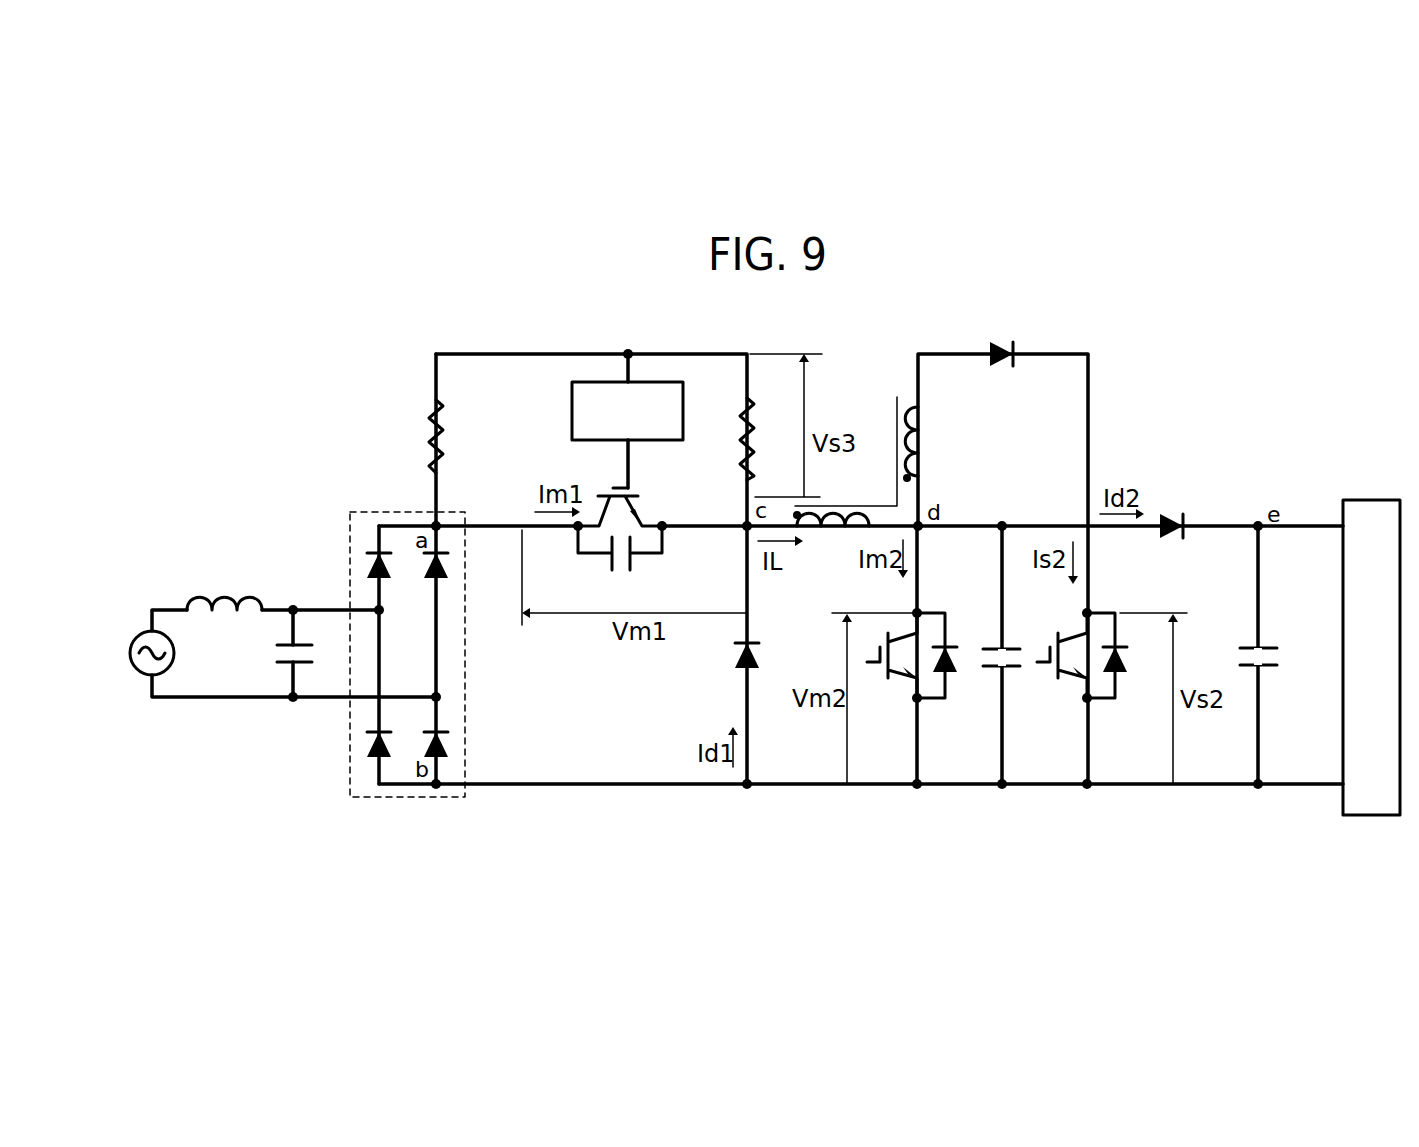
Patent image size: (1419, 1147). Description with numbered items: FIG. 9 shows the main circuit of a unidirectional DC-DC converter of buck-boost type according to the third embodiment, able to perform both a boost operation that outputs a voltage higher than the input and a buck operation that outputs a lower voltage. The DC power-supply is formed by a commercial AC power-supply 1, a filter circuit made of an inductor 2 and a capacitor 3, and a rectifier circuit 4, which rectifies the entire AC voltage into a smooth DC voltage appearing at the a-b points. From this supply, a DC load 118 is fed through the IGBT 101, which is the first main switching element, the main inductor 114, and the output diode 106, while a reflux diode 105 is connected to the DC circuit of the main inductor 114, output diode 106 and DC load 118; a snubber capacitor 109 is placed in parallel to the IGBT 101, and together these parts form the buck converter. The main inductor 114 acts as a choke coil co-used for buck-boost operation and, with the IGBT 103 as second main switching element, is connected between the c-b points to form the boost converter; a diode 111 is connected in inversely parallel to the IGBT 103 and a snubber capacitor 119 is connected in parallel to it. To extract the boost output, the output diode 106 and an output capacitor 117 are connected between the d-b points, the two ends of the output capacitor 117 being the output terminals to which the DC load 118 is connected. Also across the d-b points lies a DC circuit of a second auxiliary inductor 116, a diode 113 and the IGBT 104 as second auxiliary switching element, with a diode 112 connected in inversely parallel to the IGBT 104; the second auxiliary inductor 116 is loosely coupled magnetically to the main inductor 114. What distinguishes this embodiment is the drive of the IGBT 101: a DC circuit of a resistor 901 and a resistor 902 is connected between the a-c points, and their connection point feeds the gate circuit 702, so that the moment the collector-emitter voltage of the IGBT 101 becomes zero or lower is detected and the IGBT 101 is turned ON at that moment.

The commercial AC power-supply 1 is at (129, 655).
The inductor 2 is at (236, 600).
The capacitor 3 is at (275, 657).
The rectifier circuit 4 is at (348, 762).
The IGBT 101 is at (644, 510).
The IGBT 103 is at (885, 677).
The IGBT 104 is at (1055, 677).
The reflux diode 105 is at (737, 667).
The output diode 106 is at (1175, 536).
The snubber capacitor 109 is at (623, 565).
The diode 111 is at (955, 665).
The diode 112 is at (1127, 665).
The diode 113 is at (1005, 349).
The main inductor 114 is at (828, 534).
The second auxiliary inductor 116 is at (928, 440).
The output capacitor 117 is at (1272, 650).
The DC load 118 is at (1372, 498).
The snubber capacitor 119 is at (992, 642).
The gate circuit 702 is at (572, 410).
The resistor 901 is at (745, 463).
The resistor 902 is at (432, 428).